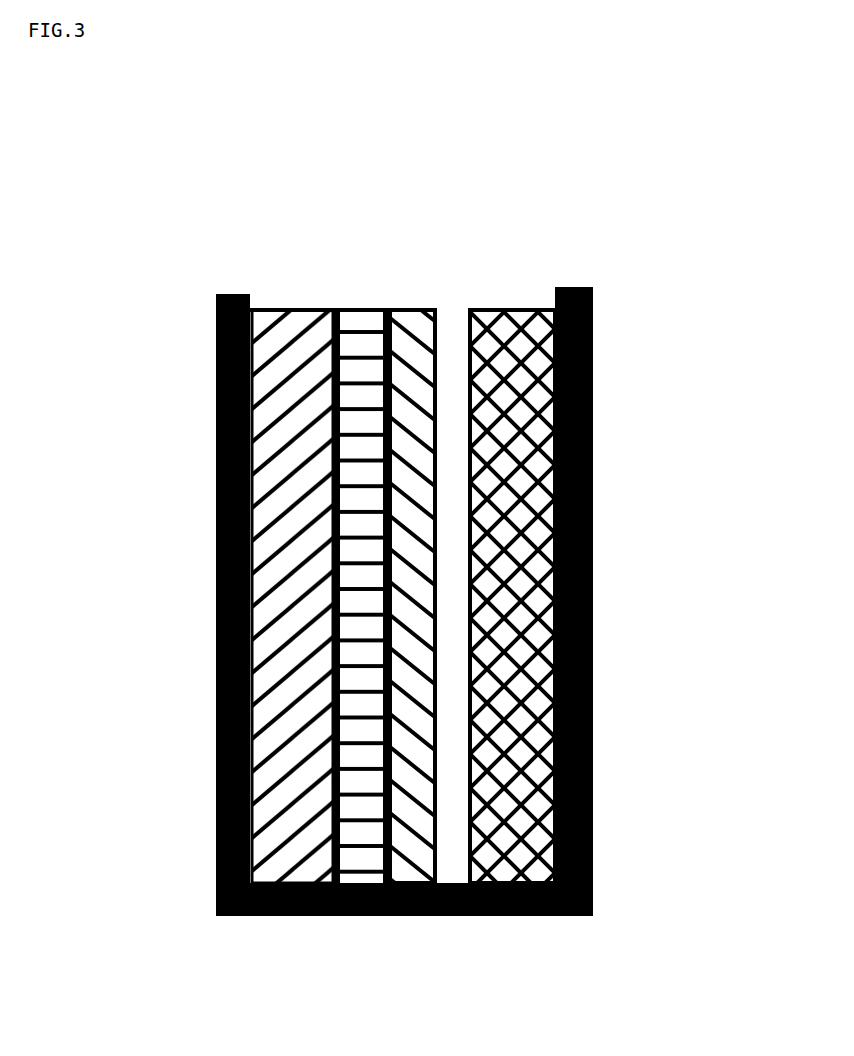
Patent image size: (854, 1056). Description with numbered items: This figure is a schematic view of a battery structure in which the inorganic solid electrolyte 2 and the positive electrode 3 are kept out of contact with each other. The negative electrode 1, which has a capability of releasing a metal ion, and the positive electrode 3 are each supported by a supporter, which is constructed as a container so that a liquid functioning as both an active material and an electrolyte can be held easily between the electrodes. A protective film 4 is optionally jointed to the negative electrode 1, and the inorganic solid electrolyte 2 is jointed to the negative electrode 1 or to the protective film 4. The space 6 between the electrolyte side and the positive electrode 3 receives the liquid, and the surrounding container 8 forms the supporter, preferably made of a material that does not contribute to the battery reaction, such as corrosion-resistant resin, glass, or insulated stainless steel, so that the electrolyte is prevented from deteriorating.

The negative electrode 1 is at (290, 292).
The inorganic solid electrolyte 2 is at (408, 292).
The positive electrode 3 is at (517, 292).
The protective film 4 is at (360, 866).
The gap / electrolyte space 6 is at (453, 866).
The battery case 8 is at (592, 899).